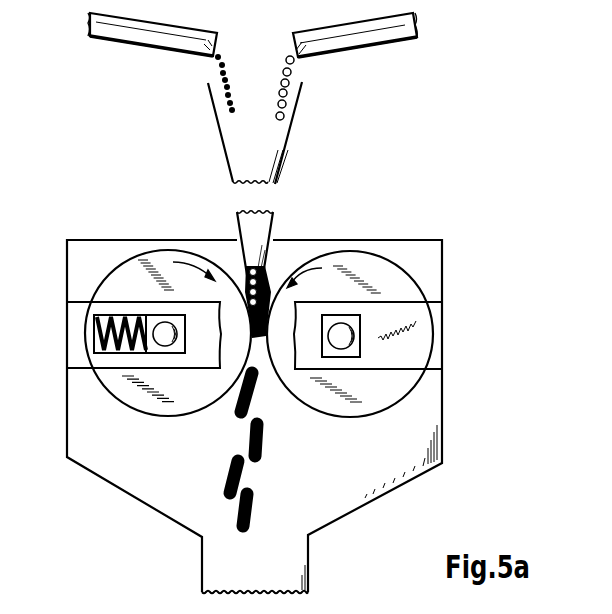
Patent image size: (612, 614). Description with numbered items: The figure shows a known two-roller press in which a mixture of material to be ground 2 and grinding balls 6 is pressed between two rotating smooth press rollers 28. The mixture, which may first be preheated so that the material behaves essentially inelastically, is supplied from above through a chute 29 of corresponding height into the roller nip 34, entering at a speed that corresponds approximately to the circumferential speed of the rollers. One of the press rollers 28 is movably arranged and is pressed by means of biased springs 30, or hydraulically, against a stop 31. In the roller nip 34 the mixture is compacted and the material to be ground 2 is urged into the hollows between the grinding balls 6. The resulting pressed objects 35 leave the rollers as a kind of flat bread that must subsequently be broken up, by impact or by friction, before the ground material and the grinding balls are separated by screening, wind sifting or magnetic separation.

The material to be ground 2 is at (292, 115).
The grinding balls 6 is at (215, 93).
The smooth press rollers 28 is at (119, 278).
The chute 29 is at (278, 165).
The biased springs 30 is at (107, 342).
The stop 31 is at (184, 340).
The roller nip 34 is at (259, 336).
The pressed objects 35 is at (263, 440).